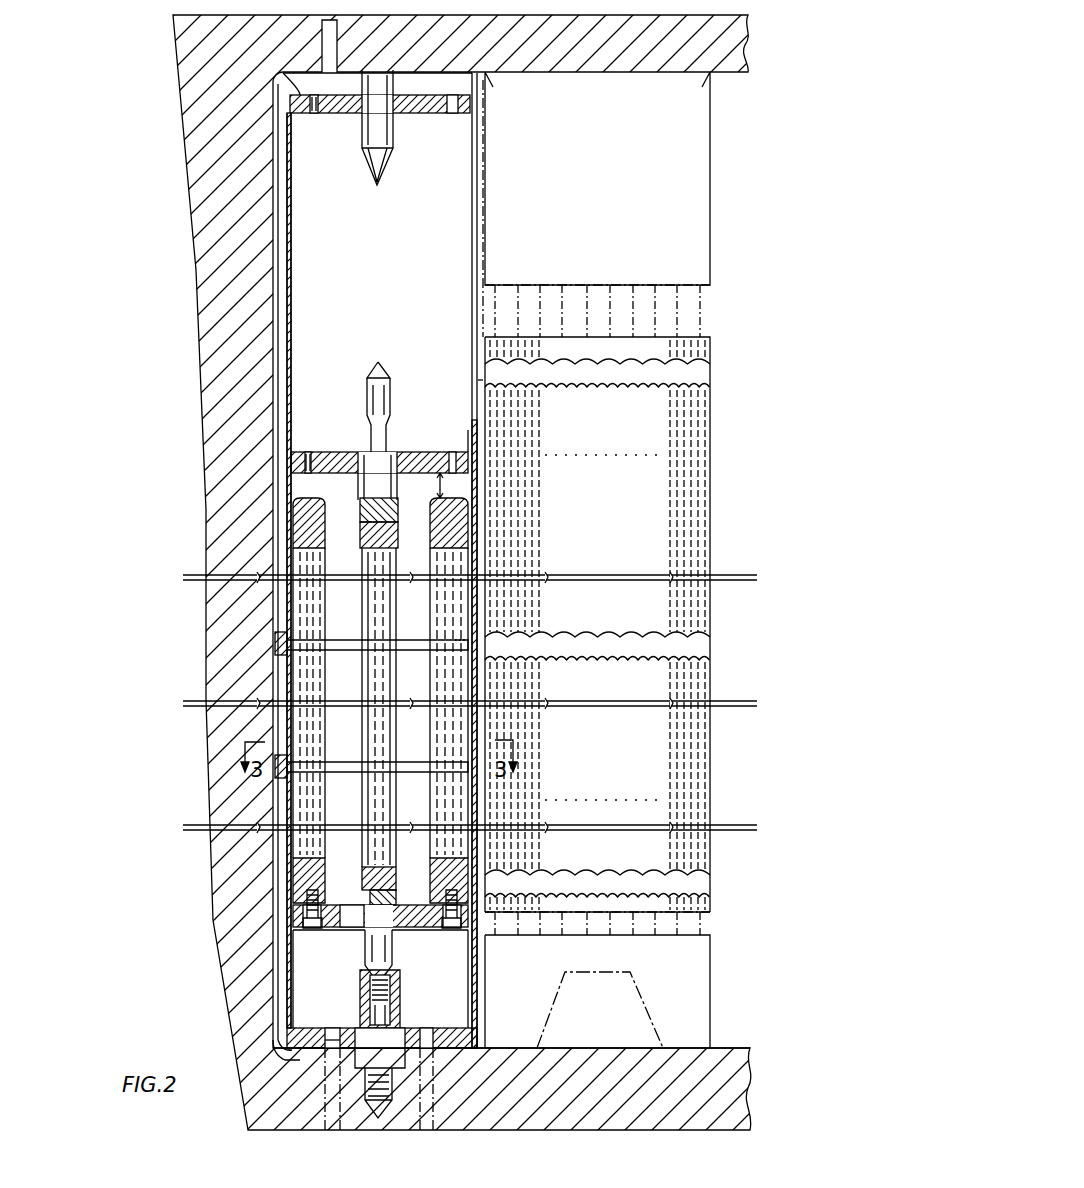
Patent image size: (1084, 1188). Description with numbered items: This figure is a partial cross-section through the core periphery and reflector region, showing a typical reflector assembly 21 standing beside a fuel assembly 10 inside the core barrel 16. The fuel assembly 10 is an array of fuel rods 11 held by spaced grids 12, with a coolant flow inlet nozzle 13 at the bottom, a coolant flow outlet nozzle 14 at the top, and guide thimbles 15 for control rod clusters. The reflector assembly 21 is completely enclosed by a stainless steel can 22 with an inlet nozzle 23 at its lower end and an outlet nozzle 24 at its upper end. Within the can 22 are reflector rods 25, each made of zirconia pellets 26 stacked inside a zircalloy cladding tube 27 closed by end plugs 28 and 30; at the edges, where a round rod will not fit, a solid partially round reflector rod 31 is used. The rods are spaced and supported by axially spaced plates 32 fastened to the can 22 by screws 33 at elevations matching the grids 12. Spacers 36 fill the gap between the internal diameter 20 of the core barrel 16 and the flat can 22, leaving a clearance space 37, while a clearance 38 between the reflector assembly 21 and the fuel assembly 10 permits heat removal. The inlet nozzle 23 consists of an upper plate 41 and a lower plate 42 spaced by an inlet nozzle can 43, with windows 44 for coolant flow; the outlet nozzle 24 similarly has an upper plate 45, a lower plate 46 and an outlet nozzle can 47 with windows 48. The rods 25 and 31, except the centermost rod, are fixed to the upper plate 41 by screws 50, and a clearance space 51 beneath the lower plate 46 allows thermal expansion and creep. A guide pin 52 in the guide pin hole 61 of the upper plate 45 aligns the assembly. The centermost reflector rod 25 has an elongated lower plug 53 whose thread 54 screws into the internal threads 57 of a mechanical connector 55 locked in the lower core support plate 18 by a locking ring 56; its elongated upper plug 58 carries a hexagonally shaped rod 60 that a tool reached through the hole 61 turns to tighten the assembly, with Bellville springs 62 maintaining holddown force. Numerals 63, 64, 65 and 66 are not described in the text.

The fuel assembly 10 is at (712, 560).
The fuel rod 11 is at (712, 470).
The grid 12 is at (712, 655).
The coolant flow inlet nozzle 13 is at (715, 1007).
The coolant flow outlet nozzle 14 is at (694, 170).
The guide thimble 15 is at (700, 320).
The core barrel 16 is at (198, 352).
The lower core support plate 18 is at (750, 1048).
The internal diameter of the core barrel 20 is at (291, 340).
The reflector assembly 21 is at (478, 555).
The can 22 is at (282, 297).
The inlet nozzle 23 is at (310, 1050).
The outlet nozzle 24 is at (298, 93).
The reflector rod 25 is at (380, 678).
The zirconia pellet 26 is at (396, 518).
The zircalloy cladding tube 27 is at (396, 542).
The end plug 28 is at (478, 512).
The end plug 30 is at (470, 880).
The partially round reflector rod 31 is at (305, 725).
The plate 32 is at (470, 640).
The screw 33 is at (461, 640).
The spacer 36 is at (280, 655).
The clearance space 37 is at (278, 632).
The clearance 38 is at (477, 78).
The upper plate 41 is at (395, 940).
The lower plate 42 is at (445, 1028).
The inlet nozzle can 43 is at (478, 1030).
The window 44 is at (478, 980).
The upper plate 45 is at (435, 113).
The lower plate 46 is at (413, 452).
The outlet nozzle can 47 is at (470, 444).
The window 48 is at (480, 378).
The screw 50 is at (445, 930).
The clearance space 51 is at (440, 487).
The guide pin 52 is at (385, 163).
The elongated lower plug 53 is at (365, 950).
The thread 54 is at (392, 985).
The mechanical connector 55 is at (392, 1000).
The locking ring 56 is at (362, 1028).
The internal threads 57 is at (362, 985).
The elongated upper plug 58 is at (362, 487).
The hexagonally shaped rod 60 is at (392, 395).
The guide pin hole 61 is at (362, 120).
The Bellville spring 62 is at (398, 905).
The screw 63 is at (325, 1028).
The screw 64 is at (325, 930).
The screw 65 is at (310, 452).
The screw 66 is at (315, 113).